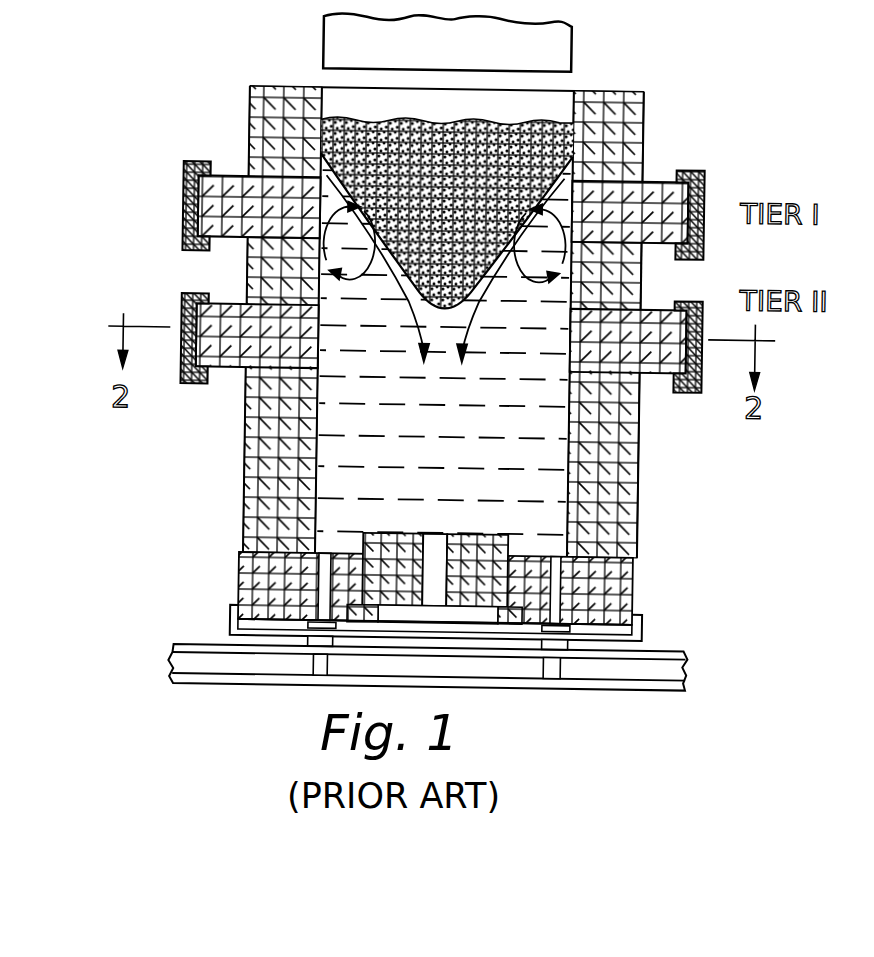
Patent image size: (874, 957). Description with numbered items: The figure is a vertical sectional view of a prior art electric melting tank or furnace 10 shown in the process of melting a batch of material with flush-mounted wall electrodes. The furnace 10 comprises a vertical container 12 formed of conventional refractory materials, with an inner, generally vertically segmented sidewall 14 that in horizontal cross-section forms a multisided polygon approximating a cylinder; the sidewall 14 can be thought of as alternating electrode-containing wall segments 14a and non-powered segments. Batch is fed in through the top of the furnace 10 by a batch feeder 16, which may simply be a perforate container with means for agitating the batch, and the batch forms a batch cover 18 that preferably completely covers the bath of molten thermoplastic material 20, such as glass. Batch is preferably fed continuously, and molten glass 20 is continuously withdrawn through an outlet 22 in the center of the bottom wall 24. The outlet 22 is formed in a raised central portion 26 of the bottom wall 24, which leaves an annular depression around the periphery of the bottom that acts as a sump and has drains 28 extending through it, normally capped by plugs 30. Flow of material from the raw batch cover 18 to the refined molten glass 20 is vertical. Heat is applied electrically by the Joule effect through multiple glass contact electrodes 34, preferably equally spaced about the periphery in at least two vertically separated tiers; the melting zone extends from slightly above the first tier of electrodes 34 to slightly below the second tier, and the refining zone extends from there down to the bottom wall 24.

The furnace 10 is at (588, 70).
The vertical container 12 is at (697, 149).
The sidewall 14 is at (631, 112).
The electrode-containing wall segments 14a is at (640, 277).
The batch feeder 16 is at (316, 42).
The batch cover 18 is at (452, 204).
The molten thermoplastic material 20 is at (461, 423).
The outlet 22 is at (438, 546).
The bottom wall 24 is at (523, 553).
The raised central portion 26 is at (391, 541).
The drains 28 is at (326, 558).
The plugs 30 is at (318, 606).
The glass contact electrodes 34 is at (226, 179).